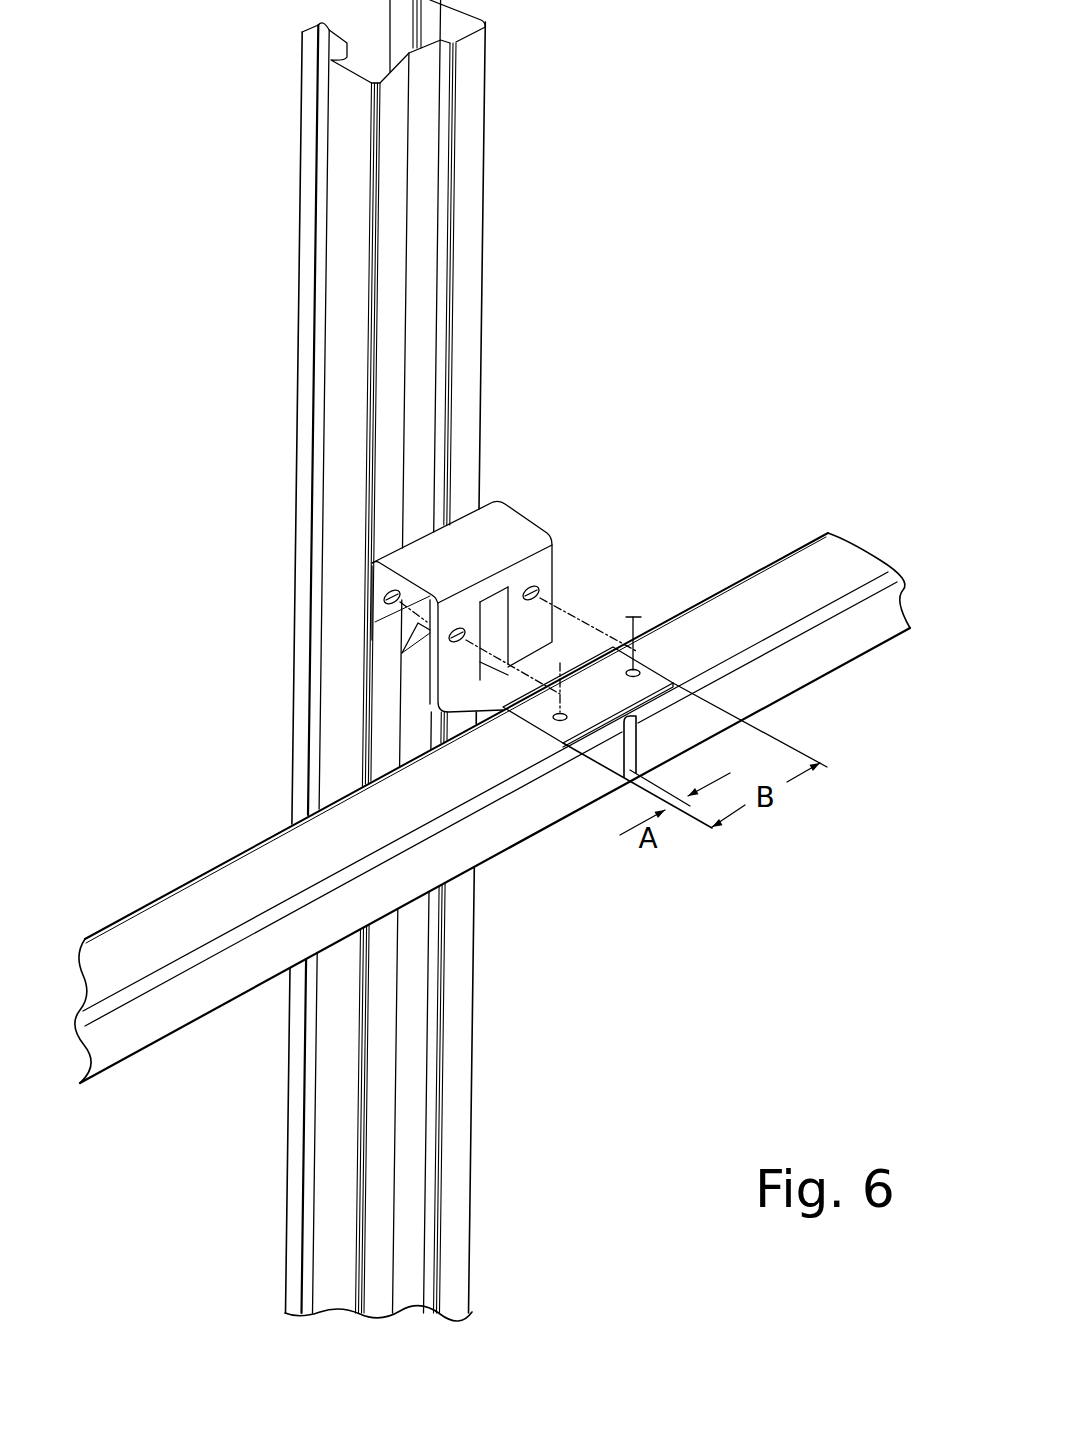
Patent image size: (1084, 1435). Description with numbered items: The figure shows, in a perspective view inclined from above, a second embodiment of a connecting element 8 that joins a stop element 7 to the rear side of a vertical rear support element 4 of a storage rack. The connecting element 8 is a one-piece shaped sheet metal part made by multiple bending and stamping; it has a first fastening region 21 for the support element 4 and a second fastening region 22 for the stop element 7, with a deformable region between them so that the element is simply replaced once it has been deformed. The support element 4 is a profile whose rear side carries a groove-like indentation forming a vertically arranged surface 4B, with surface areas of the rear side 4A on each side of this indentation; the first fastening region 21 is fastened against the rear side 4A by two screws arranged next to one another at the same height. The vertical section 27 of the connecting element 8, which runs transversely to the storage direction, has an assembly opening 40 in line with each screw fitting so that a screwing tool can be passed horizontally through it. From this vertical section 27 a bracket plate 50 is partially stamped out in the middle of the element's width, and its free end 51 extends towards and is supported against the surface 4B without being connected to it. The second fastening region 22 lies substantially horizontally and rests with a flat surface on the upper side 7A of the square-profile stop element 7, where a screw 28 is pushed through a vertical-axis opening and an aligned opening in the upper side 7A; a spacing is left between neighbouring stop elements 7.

The rear support element 4 is at (387, 660).
The rear side 4A is at (393, 200).
The vertically arranged surface 4B is at (430, 370).
The stop element 7 is at (497, 741).
The upper side 7A is at (825, 577).
The connecting element 8 is at (516, 644).
The first fastening region 21 is at (378, 606).
The second fastening region 22 is at (610, 670).
The vertical section 27 is at (455, 680).
The screw 28 is at (640, 627).
The assembly opening 40 is at (539, 594).
The bracket plate 50 is at (423, 662).
The free end 51 is at (413, 631).